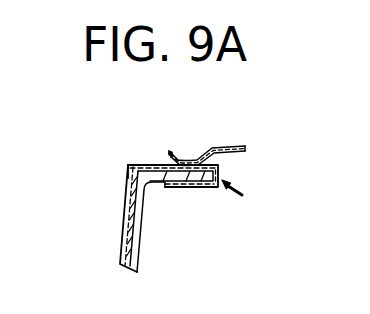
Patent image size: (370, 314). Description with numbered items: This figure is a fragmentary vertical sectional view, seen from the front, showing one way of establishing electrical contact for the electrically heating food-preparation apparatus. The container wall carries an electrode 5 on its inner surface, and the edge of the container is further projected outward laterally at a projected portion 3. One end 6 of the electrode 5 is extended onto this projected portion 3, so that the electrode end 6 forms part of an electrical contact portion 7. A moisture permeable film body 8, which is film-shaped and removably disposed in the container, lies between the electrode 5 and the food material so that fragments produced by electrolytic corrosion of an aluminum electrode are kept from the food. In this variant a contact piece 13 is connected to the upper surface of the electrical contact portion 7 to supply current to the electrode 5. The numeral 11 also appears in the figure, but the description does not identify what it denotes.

The projected portion 3 is at (193, 182).
The electrode 5 is at (122, 231).
The electrode end 6 is at (147, 169).
The electrical contact portion 7 is at (242, 195).
The moisture permeable film body 8 is at (128, 176).
The gap 11 is at (186, 268).
The contact piece 13 is at (238, 150).